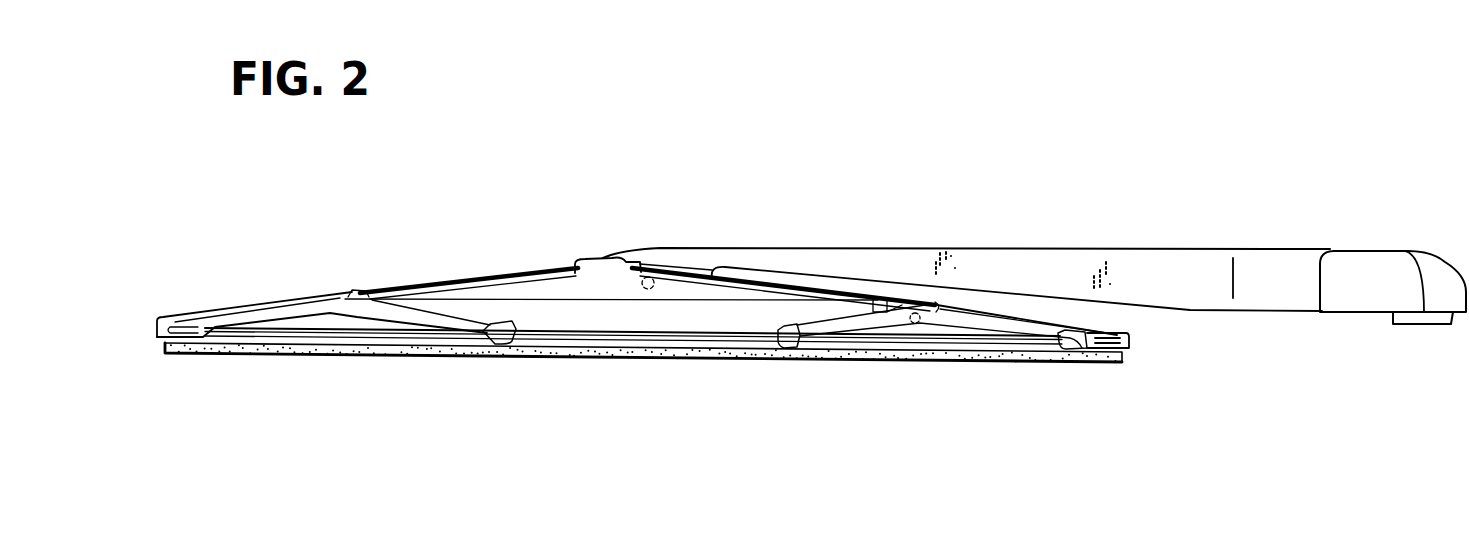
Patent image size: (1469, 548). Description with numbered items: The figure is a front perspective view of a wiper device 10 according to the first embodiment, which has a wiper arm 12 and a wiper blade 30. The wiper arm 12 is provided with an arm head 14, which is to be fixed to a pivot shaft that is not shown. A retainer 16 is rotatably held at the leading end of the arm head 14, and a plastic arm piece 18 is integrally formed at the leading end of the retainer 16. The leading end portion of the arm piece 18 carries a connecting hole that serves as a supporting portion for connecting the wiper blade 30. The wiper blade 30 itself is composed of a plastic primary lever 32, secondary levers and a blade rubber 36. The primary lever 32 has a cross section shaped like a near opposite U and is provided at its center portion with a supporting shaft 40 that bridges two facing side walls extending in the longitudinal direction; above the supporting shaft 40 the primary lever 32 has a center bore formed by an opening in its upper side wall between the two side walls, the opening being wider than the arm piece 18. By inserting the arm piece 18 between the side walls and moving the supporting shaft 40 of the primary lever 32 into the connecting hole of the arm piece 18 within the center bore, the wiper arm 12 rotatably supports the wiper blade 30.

The wiper device 10 is at (830, 150).
The wiper arm 12 is at (920, 221).
The arm head 14 is at (1375, 270).
The retainer 16 is at (1042, 262).
The arm piece 18 is at (598, 262).
The wiper blade 30 is at (492, 236).
The primary lever 32 is at (554, 291).
The blade rubber 36 is at (670, 357).
The supporting shaft 40 is at (645, 290).